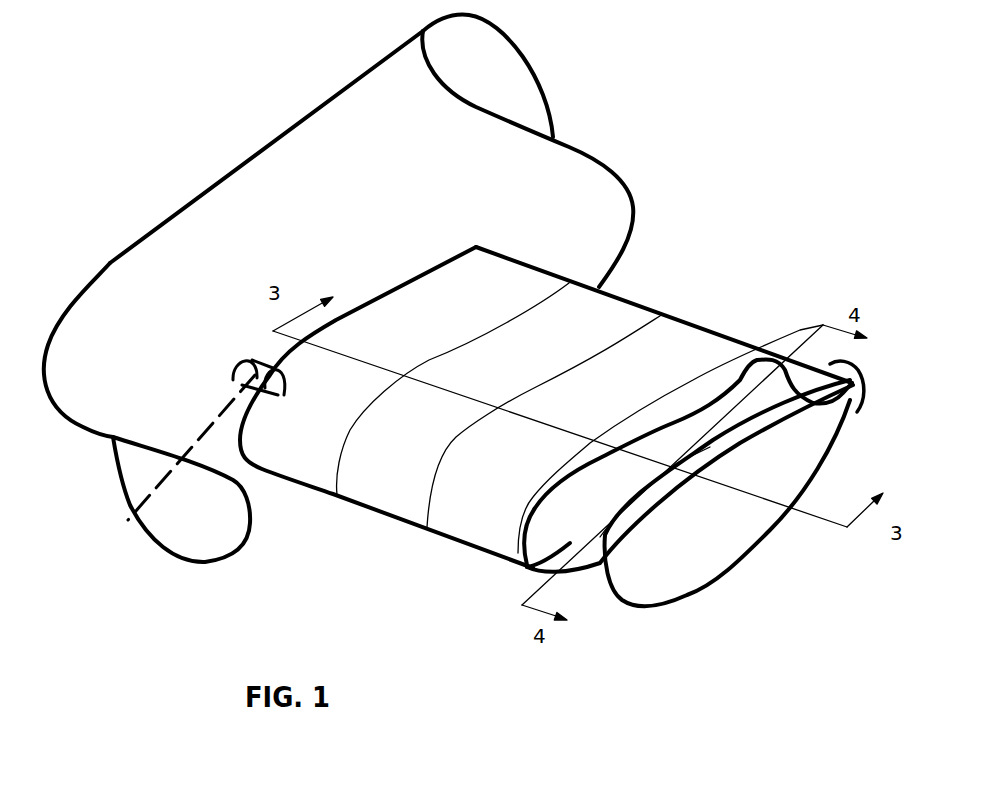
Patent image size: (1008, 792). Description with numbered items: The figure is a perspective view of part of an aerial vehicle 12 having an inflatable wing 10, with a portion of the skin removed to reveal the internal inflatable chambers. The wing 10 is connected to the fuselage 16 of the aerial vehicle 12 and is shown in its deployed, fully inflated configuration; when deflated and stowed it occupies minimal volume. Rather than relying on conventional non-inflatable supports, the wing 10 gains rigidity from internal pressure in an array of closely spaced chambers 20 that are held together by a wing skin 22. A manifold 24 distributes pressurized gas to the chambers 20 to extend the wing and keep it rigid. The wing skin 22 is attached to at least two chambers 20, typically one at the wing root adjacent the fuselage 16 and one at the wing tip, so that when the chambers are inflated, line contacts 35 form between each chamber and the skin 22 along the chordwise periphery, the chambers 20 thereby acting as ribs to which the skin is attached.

The wing 10 is at (650, 280).
The aerial vehicle 12 is at (680, 195).
The fuselage 16 is at (255, 504).
The inflatable chambers 20 is at (527, 567).
The wing skin 22 is at (857, 412).
The manifold 24 is at (128, 523).
The line contacts 35 is at (429, 357).